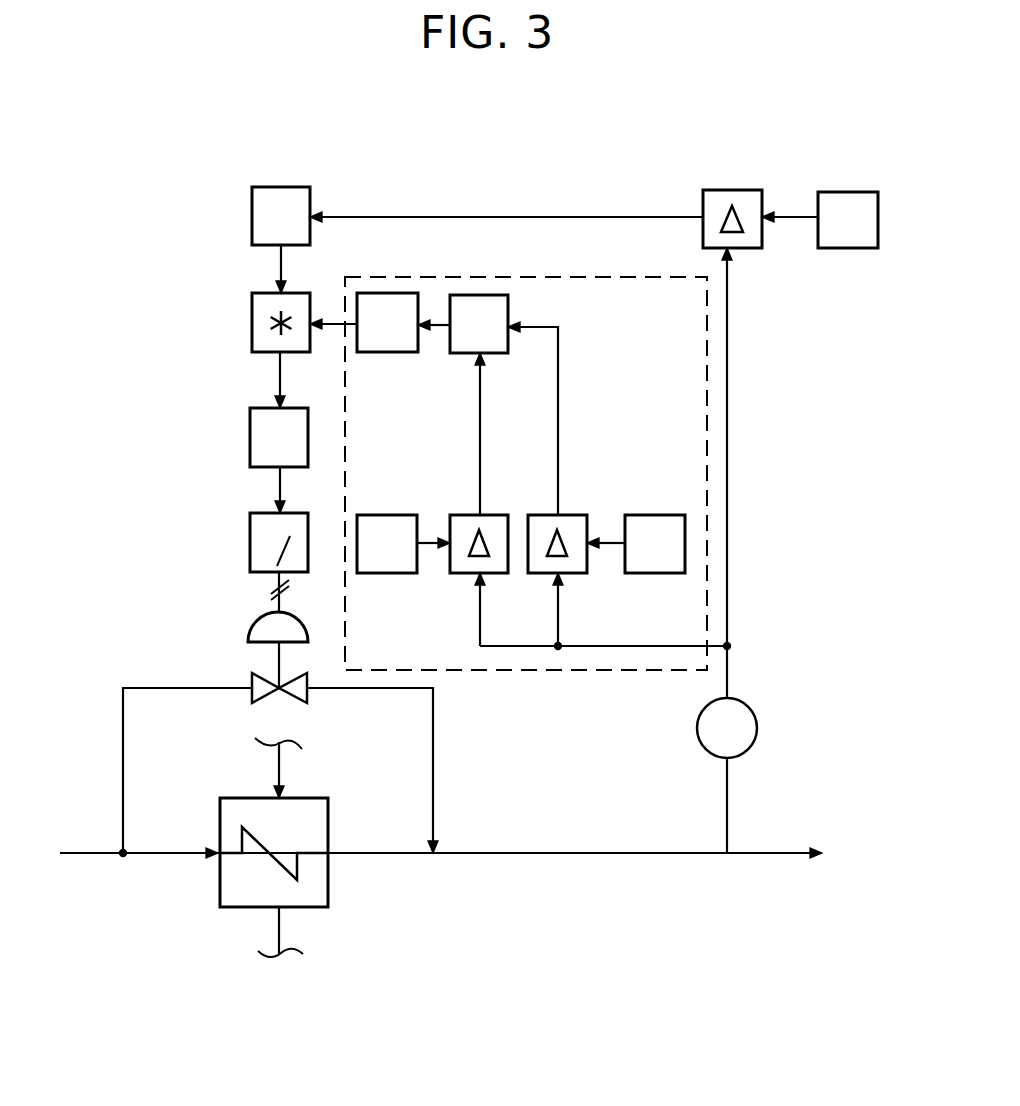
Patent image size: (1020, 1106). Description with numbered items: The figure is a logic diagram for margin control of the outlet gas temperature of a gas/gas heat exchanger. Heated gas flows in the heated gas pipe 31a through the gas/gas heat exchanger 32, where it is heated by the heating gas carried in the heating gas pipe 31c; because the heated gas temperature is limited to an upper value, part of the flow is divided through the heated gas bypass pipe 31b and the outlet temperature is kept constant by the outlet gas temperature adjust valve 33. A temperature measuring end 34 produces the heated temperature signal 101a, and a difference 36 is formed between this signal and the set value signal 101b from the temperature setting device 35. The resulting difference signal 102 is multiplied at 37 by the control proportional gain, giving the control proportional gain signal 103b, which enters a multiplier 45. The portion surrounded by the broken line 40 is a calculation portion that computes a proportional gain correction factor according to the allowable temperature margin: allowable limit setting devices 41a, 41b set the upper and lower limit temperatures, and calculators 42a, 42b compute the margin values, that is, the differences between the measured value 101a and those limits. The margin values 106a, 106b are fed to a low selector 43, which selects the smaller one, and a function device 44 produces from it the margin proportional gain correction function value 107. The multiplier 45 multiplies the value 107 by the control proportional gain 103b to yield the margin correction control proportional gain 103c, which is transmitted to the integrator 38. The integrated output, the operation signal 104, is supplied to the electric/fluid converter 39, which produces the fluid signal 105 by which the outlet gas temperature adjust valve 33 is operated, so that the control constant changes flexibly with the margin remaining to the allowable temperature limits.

The heated gas pipe 31a is at (641, 855).
The heated gas bypass pipe 31b is at (433, 748).
The heating gas pipe 31c is at (280, 941).
The gas/gas heat exchanger 32 is at (220, 880).
The outlet gas temperature adjust valve 33 is at (250, 628).
The temperature measuring end 34 is at (756, 708).
The temperature setting device 35 is at (840, 192).
The difference 36 is at (720, 190).
The control proportional gain multiplication 37 is at (252, 194).
The integrator 38 is at (250, 428).
The electric/fluid converter 39 is at (250, 538).
The calculation portion 40 is at (524, 672).
The allowable limit setting device 41a is at (652, 515).
The allowable limit setting device 41b is at (372, 515).
The calculator 42a is at (587, 562).
The calculator 42b is at (450, 568).
The low selector 43 is at (508, 300).
The function device 44 is at (418, 296).
The multiplier 45 is at (252, 322).
The heated temperature signal 101a is at (730, 470).
The set value signal 101b is at (792, 218).
The difference signal 102 is at (602, 216).
The control proportional gain 103b is at (281, 264).
The margin correction control proportional gain 103c is at (280, 370).
The operation signal 104 is at (280, 486).
The fluid signal 105 is at (274, 590).
The margin value signal 106a is at (558, 382).
The margin value signal 106b is at (480, 410).
The margin proportional gain correction function value 107 is at (332, 322).